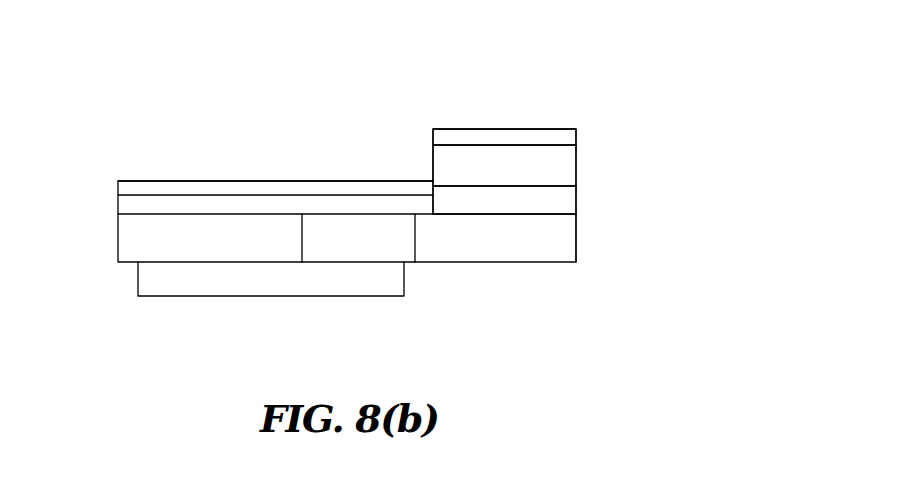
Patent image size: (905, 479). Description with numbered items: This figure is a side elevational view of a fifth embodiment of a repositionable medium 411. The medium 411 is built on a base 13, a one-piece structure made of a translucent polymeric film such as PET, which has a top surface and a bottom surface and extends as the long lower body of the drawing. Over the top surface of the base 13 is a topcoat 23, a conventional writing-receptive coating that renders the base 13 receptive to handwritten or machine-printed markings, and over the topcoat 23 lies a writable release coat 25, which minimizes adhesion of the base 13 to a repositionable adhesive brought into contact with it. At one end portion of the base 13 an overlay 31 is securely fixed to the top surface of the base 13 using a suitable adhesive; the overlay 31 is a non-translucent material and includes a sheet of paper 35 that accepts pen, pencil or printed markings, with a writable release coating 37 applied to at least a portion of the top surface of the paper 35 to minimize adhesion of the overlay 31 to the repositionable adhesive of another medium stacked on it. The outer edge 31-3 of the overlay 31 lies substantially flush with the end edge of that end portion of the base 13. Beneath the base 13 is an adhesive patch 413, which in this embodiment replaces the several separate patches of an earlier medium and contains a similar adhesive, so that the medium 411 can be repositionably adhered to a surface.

The base 13 is at (116, 241).
The topcoat 23 is at (152, 205).
The writable release coat 25 is at (217, 188).
The repositionable medium 411 is at (302, 143).
The adhesive patch 413 is at (265, 281).
The overlay 31 is at (429, 144).
The writable release coating 37 is at (505, 128).
The outer edge 31-3 is at (576, 150).
The sheet of paper 35 is at (548, 164).